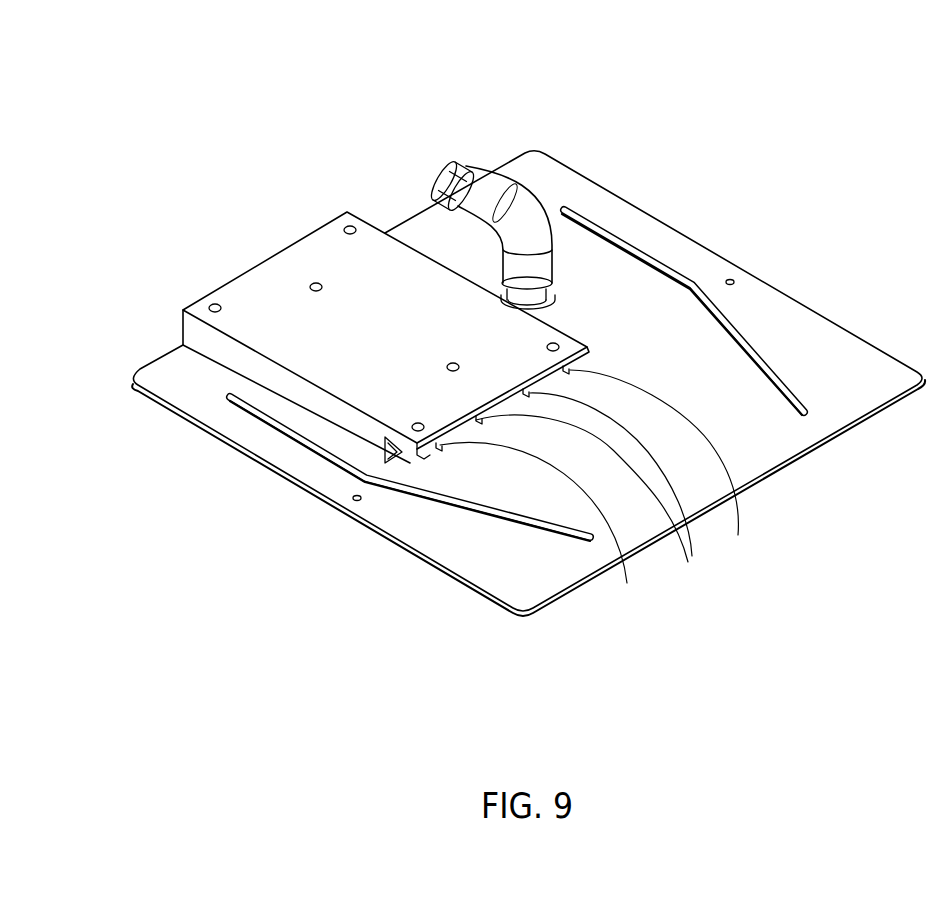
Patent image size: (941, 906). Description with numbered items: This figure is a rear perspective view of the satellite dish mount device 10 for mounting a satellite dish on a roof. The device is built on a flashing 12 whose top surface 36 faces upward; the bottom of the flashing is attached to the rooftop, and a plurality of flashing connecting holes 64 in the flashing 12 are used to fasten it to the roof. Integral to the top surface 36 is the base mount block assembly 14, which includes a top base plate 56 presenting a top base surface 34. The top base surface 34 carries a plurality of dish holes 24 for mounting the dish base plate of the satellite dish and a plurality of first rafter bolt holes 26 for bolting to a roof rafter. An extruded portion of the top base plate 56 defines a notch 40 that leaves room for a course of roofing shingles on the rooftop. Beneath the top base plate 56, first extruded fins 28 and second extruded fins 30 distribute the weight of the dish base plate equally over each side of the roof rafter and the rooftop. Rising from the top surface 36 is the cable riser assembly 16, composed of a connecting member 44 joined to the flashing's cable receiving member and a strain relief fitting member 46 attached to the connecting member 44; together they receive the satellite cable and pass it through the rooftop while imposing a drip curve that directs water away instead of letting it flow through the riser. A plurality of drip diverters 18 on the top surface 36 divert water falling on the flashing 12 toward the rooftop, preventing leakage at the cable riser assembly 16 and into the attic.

The satellite dish mount device 10 is at (699, 120).
The flashing 12 is at (842, 350).
The base mount block assembly 14 is at (180, 326).
The cable riser assembly 16 is at (509, 175).
The drip diverters 18 is at (600, 227).
The dish holes 24 is at (349, 226).
The first rafter bolt holes 26 is at (315, 283).
The first extruded fins 28 is at (594, 492).
The second extruded fins 30 is at (586, 487).
The top base surface 34 is at (351, 365).
The top surface 36 is at (655, 322).
The notch 40 is at (367, 447).
The connecting member 44 is at (528, 206).
The strain relief fitting member 46 is at (460, 160).
The top base plate 56 is at (237, 308).
The flashing connecting holes 64 is at (730, 280).